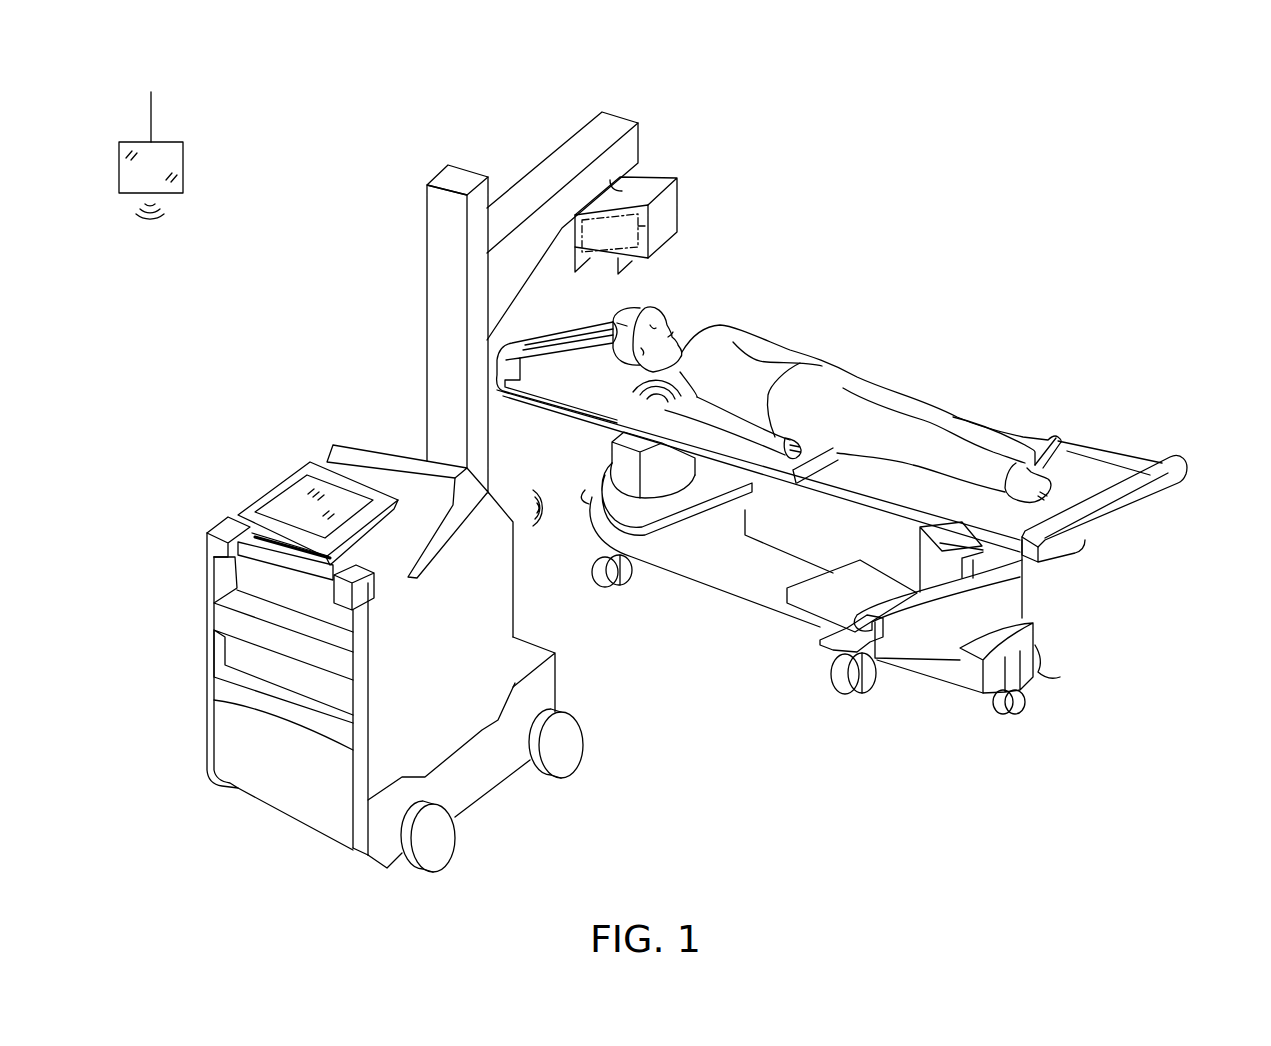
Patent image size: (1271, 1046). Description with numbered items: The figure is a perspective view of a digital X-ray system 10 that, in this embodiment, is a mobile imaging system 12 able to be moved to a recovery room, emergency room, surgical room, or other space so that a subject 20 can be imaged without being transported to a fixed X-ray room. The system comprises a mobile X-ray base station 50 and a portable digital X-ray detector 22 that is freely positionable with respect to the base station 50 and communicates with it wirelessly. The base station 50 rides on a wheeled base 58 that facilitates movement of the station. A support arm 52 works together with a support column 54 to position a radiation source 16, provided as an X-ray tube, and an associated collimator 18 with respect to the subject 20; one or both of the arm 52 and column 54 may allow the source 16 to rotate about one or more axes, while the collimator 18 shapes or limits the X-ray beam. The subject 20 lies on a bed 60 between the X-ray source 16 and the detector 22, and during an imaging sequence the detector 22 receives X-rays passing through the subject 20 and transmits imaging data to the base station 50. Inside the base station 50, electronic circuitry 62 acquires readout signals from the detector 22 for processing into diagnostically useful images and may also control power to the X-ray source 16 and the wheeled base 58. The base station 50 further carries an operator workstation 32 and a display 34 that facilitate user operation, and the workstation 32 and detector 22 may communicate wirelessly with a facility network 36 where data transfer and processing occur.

The X-ray system 10 is at (693, 95).
The mobile imaging system 12 is at (366, 141).
The radiation source 16 is at (650, 232).
The collimator 18 is at (587, 272).
The subject 20 is at (748, 358).
The portable digital X-ray detector 22 is at (785, 465).
The operator workstation 32 is at (283, 641).
The display 34 is at (297, 502).
The network 36 is at (186, 160).
The mobile X-ray base station 50 is at (300, 389).
The support arm 52 is at (520, 128).
The support column 54 is at (440, 280).
The wheeled base 58 is at (563, 682).
The bed 60 is at (835, 470).
The electronic circuitry 62 is at (434, 726).